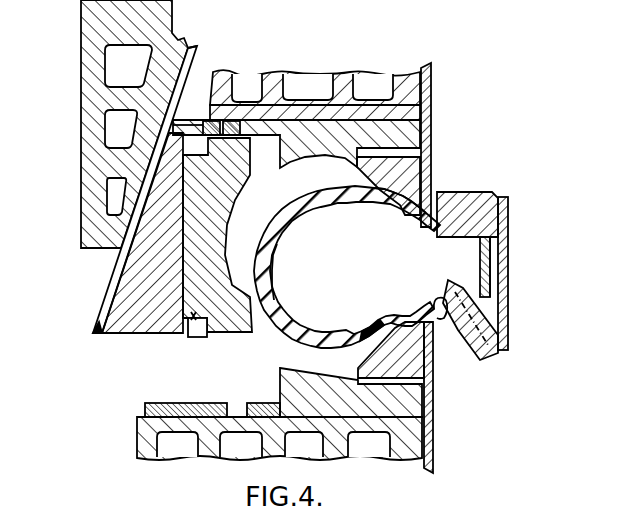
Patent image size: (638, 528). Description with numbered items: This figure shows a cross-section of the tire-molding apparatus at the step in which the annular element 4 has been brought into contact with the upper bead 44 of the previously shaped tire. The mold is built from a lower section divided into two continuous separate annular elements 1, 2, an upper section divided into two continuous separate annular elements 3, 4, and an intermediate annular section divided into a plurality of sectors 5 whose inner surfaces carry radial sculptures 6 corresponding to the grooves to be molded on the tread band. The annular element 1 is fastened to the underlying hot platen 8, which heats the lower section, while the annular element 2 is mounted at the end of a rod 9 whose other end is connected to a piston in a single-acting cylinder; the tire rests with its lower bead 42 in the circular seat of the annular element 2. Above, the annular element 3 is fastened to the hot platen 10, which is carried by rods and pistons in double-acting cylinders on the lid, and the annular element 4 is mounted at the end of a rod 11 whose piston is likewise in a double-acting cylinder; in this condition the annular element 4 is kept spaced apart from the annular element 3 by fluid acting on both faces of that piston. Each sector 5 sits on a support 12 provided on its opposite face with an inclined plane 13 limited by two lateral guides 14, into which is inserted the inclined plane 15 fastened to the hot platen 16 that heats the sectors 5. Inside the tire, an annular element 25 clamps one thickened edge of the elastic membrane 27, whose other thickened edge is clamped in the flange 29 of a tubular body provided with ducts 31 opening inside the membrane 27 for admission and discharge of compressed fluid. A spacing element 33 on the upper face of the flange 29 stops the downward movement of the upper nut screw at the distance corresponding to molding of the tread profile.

The annular element 1 is at (292, 392).
The annular element 2 is at (378, 363).
The annular element 3 is at (306, 130).
The annular element 4 is at (418, 163).
The sector 5 is at (193, 331).
The radial sculptures 6 is at (233, 292).
The hot platen 8 is at (143, 447).
The rod 9 is at (434, 437).
The hot platen 10 is at (224, 79).
The rod 11 is at (432, 81).
The support 12 is at (113, 305).
The inclined plane 13 is at (96, 338).
The lateral guides 14 is at (115, 272).
The inclined plane 15 is at (191, 48).
The hot platen 16 is at (88, 107).
The annular element 25 is at (500, 197).
The elastic membrane 27 is at (288, 238).
The flange 29 is at (451, 330).
The ducts 31 is at (487, 332).
The spacing element 33 is at (490, 248).
The lower bead 42 is at (380, 324).
The upper bead 44 is at (385, 205).